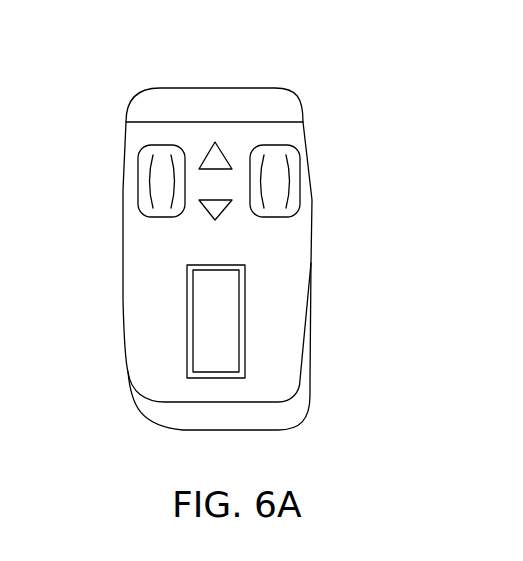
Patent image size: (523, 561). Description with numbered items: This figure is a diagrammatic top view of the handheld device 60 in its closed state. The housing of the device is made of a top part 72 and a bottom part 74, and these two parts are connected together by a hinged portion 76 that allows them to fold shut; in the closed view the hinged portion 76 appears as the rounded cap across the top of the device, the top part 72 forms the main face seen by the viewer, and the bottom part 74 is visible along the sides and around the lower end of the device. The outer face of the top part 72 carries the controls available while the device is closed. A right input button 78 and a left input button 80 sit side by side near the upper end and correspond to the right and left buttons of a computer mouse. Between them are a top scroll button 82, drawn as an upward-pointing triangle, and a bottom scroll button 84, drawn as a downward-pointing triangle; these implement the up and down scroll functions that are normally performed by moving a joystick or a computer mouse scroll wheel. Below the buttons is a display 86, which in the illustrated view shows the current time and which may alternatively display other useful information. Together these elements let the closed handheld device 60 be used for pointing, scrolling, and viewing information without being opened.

The handheld device 60 is at (323, 60).
The top part 72 is at (122, 288).
The bottom part 74 is at (310, 377).
The hinged portion 76 is at (136, 98).
The right input button 78 is at (300, 178).
The left input button 80 is at (137, 180).
The top scroll button 82 is at (212, 155).
The bottom scroll button 84 is at (213, 210).
The display 86 is at (240, 322).